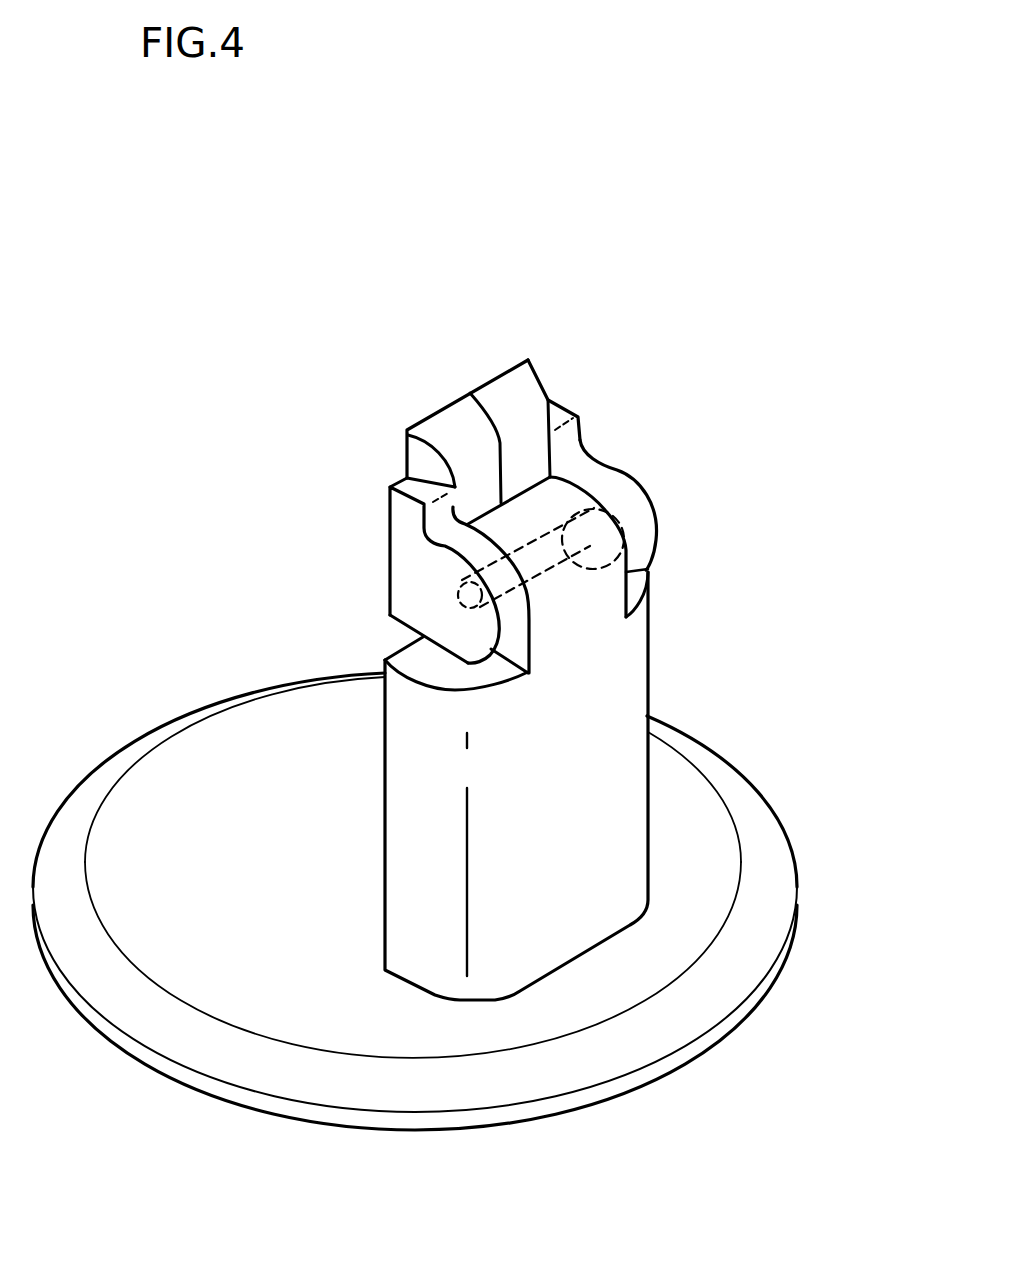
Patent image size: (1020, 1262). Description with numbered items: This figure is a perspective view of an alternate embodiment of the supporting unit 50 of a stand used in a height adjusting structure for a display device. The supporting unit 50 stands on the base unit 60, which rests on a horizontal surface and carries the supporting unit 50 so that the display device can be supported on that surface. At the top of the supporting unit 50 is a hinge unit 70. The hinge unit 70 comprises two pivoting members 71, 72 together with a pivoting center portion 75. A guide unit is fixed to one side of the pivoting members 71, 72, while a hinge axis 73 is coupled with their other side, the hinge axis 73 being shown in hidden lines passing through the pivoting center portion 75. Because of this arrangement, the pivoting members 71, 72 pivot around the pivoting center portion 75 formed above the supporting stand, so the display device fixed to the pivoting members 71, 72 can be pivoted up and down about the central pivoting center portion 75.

The supporting unit 50 is at (607, 780).
The base unit 60 is at (683, 1013).
The hinge unit 70 is at (565, 431).
The pivoting member 71 is at (503, 392).
The pivoting member 72 is at (447, 428).
The hinge axis 73 is at (640, 548).
The pivoting center portion 75 is at (602, 512).